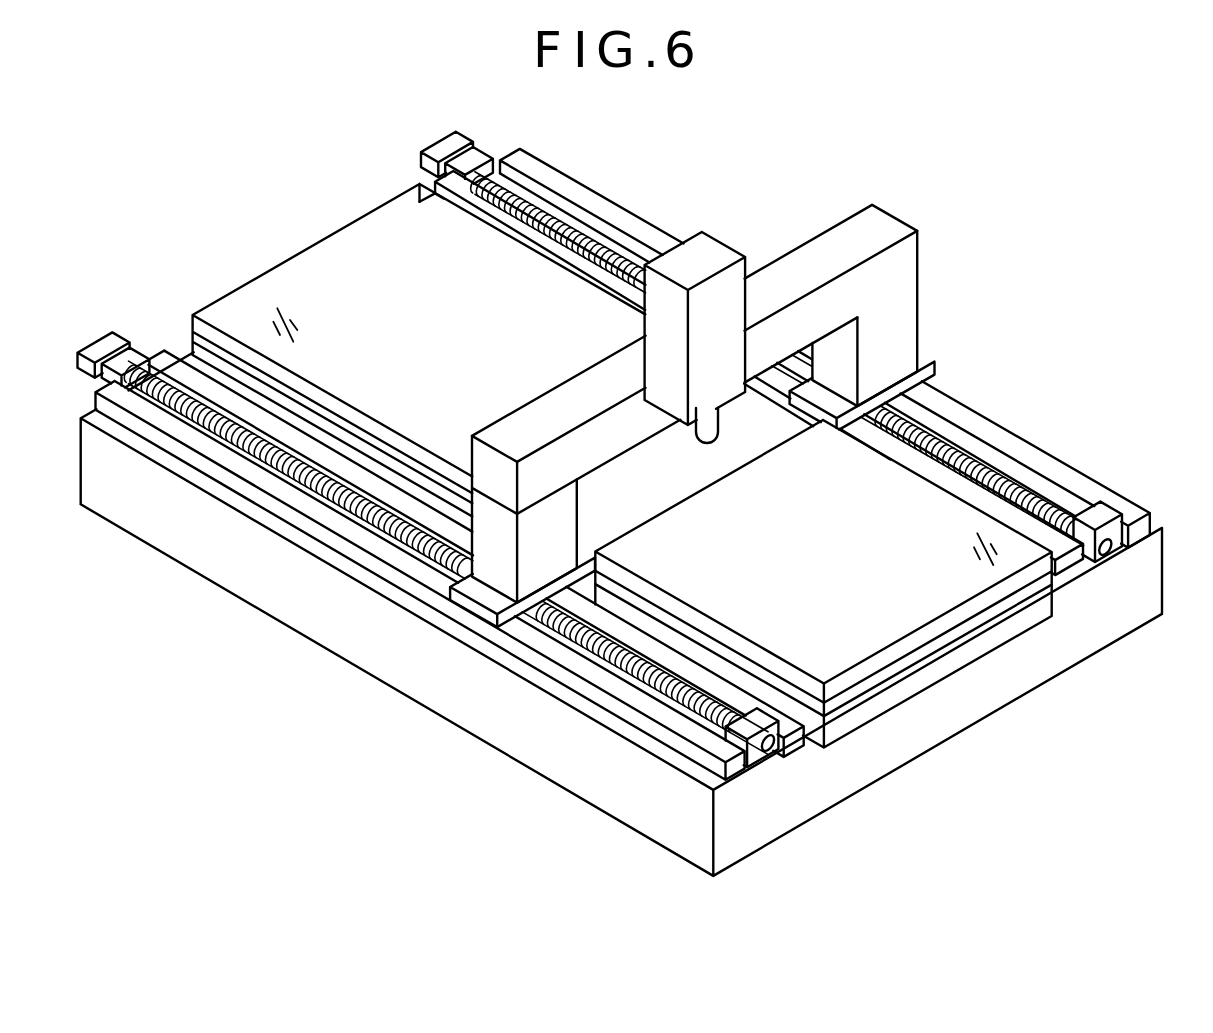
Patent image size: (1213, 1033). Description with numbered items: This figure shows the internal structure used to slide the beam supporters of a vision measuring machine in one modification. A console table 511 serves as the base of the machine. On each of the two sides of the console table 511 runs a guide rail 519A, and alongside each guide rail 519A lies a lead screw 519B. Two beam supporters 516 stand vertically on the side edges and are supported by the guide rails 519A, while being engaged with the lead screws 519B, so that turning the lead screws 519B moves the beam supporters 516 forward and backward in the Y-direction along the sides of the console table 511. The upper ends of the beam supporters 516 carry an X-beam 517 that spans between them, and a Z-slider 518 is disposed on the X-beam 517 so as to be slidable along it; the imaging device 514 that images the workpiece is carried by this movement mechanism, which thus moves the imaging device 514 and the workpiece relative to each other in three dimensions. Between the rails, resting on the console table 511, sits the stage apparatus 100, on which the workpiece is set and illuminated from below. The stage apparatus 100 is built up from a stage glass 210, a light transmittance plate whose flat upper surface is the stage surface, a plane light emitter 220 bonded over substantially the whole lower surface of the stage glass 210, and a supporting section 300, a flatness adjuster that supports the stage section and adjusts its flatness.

The stage apparatus 100 is at (867, 609).
The stage glass 210 is at (967, 606).
The plane light emitter 220 is at (947, 637).
The supporting section 300 is at (918, 677).
The console table 511 is at (892, 766).
The imaging device 514 is at (710, 441).
The beam supporters 516 is at (908, 325).
The X-beam 517 is at (518, 417).
The Z-slider 518 is at (722, 285).
The guide rails 519A is at (1113, 507).
The lead screws 519B is at (1057, 510).